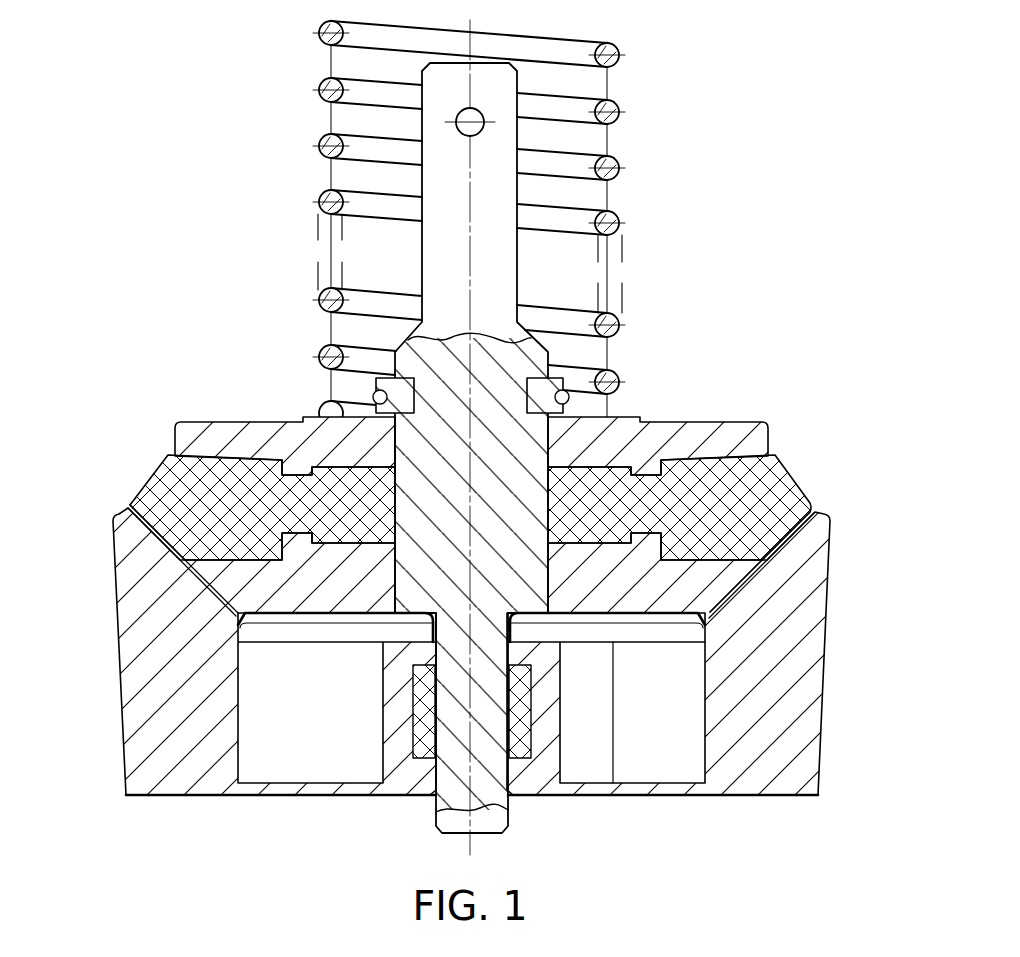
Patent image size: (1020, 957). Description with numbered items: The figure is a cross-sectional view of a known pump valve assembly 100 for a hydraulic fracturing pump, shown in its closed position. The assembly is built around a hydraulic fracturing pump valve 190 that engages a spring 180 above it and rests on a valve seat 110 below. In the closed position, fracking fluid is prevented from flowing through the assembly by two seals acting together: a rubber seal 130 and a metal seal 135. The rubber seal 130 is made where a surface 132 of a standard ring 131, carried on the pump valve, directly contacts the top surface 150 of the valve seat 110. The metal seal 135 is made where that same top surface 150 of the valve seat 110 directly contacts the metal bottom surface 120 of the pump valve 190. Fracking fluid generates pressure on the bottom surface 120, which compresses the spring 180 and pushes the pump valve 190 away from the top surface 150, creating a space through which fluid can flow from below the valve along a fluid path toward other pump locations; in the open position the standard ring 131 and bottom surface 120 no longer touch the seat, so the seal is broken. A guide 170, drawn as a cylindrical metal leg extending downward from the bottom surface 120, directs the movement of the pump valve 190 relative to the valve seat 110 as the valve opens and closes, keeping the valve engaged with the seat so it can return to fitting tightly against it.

The pump valve assembly 100 is at (674, 147).
The valve seat 110 is at (800, 723).
The pump valve bottom surface 120 is at (647, 615).
The rubber seal 130 is at (178, 540).
The standard ring 131 is at (176, 478).
The surface of standard ring 132 is at (784, 549).
The metal seal 135 is at (230, 593).
The top surface of valve seat 150 is at (729, 576).
The guide 170 is at (487, 729).
The spring 180 is at (623, 212).
The hydraulic fracturing pump valve 190 is at (414, 438).